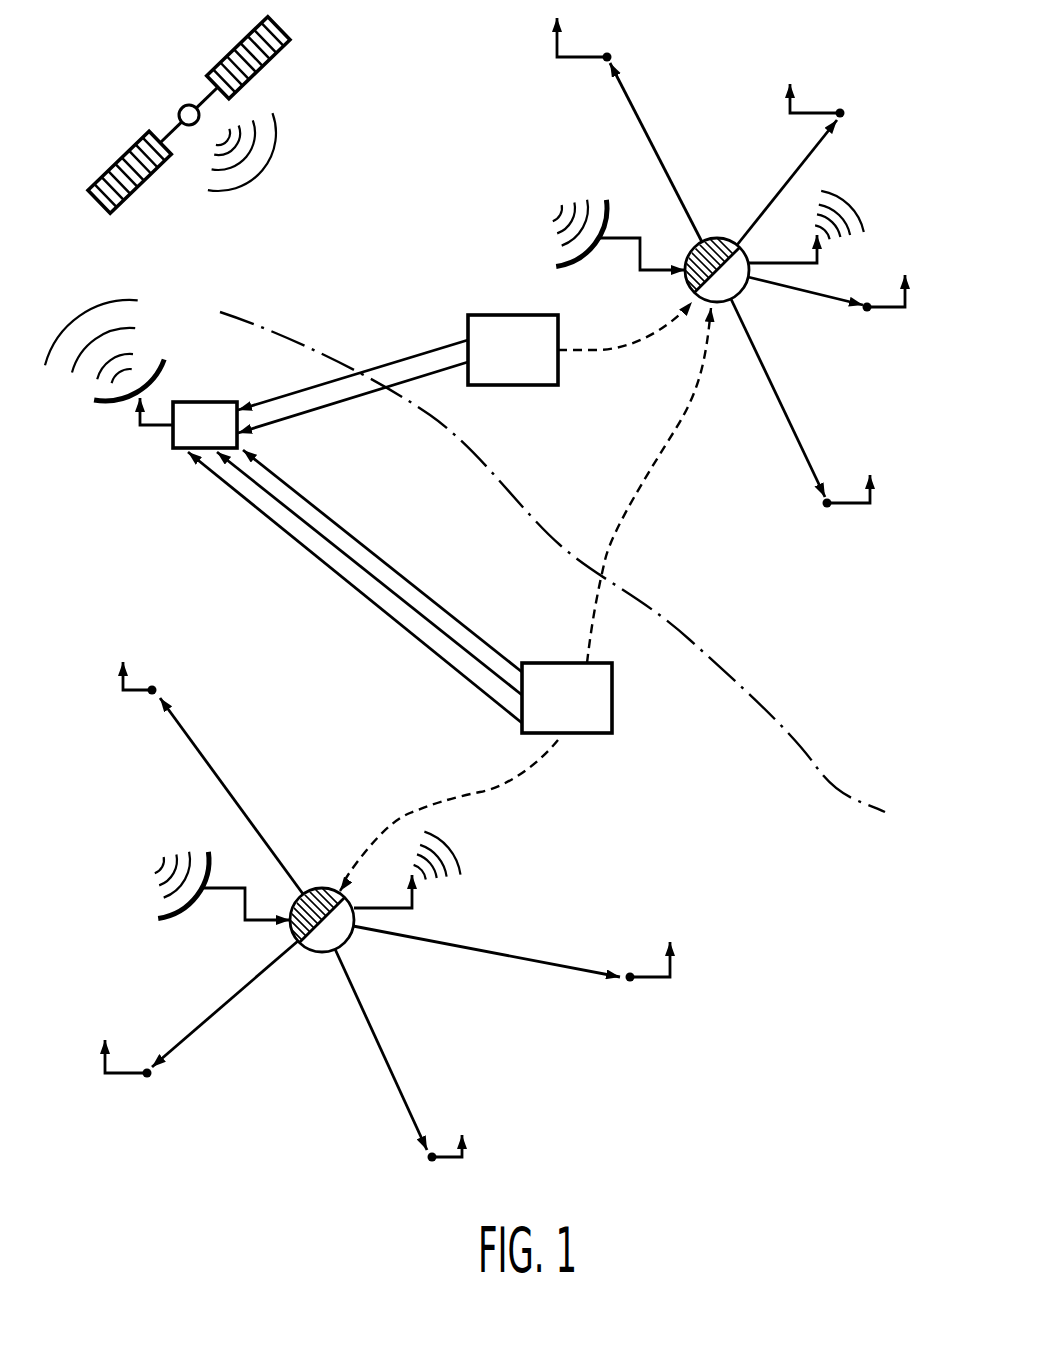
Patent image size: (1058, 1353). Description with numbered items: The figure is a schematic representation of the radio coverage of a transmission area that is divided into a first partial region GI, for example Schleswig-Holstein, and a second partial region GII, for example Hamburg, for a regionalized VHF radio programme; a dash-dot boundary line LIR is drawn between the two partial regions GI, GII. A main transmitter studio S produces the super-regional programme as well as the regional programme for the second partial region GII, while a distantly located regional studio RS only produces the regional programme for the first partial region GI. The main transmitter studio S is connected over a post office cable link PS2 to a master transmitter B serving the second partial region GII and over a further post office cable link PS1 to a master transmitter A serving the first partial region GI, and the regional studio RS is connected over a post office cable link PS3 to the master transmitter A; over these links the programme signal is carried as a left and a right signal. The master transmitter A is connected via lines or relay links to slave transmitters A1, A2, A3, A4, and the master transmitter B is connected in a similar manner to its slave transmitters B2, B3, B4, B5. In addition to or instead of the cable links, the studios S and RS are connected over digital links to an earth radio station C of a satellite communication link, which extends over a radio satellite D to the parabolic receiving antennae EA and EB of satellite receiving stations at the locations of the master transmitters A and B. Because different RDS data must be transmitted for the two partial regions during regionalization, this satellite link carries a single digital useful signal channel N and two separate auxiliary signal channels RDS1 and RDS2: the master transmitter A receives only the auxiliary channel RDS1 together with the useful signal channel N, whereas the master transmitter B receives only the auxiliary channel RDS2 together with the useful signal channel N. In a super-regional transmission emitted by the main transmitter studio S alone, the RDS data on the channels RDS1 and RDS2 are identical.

The radio satellite D is at (189, 207).
The master transmitter A is at (740, 296).
The master transmitter B is at (320, 953).
The earth radio station C is at (154, 487).
The regional studio RS is at (513, 350).
The main transmitter studio S is at (567, 698).
The slave transmitter A1 is at (870, 311).
The slave transmitter A2 is at (843, 110).
The slave transmitter A3 is at (608, 54).
The slave transmitter A4 is at (830, 508).
The slave transmitter B2 is at (155, 686).
The slave transmitter B3 is at (148, 1078).
The slave transmitter B4 is at (427, 1160).
The mobile unit B5 is at (629, 982).
The parabolic receiving antenna EA is at (552, 268).
The parabolic receiving antenna EB is at (152, 917).
The digital useful signal channel N is at (313, 387).
The auxiliary signal channel RDS1 is at (313, 409).
The auxiliary signal channel RDS2 is at (432, 623).
The post office cable link PS1 is at (673, 437).
The post office cable link PS2 is at (482, 792).
The post office cable link PS3 is at (628, 350).
The regional boundary line LIR is at (625, 637).
The first partial region GI is at (840, 753).
The second partial region GII is at (842, 842).